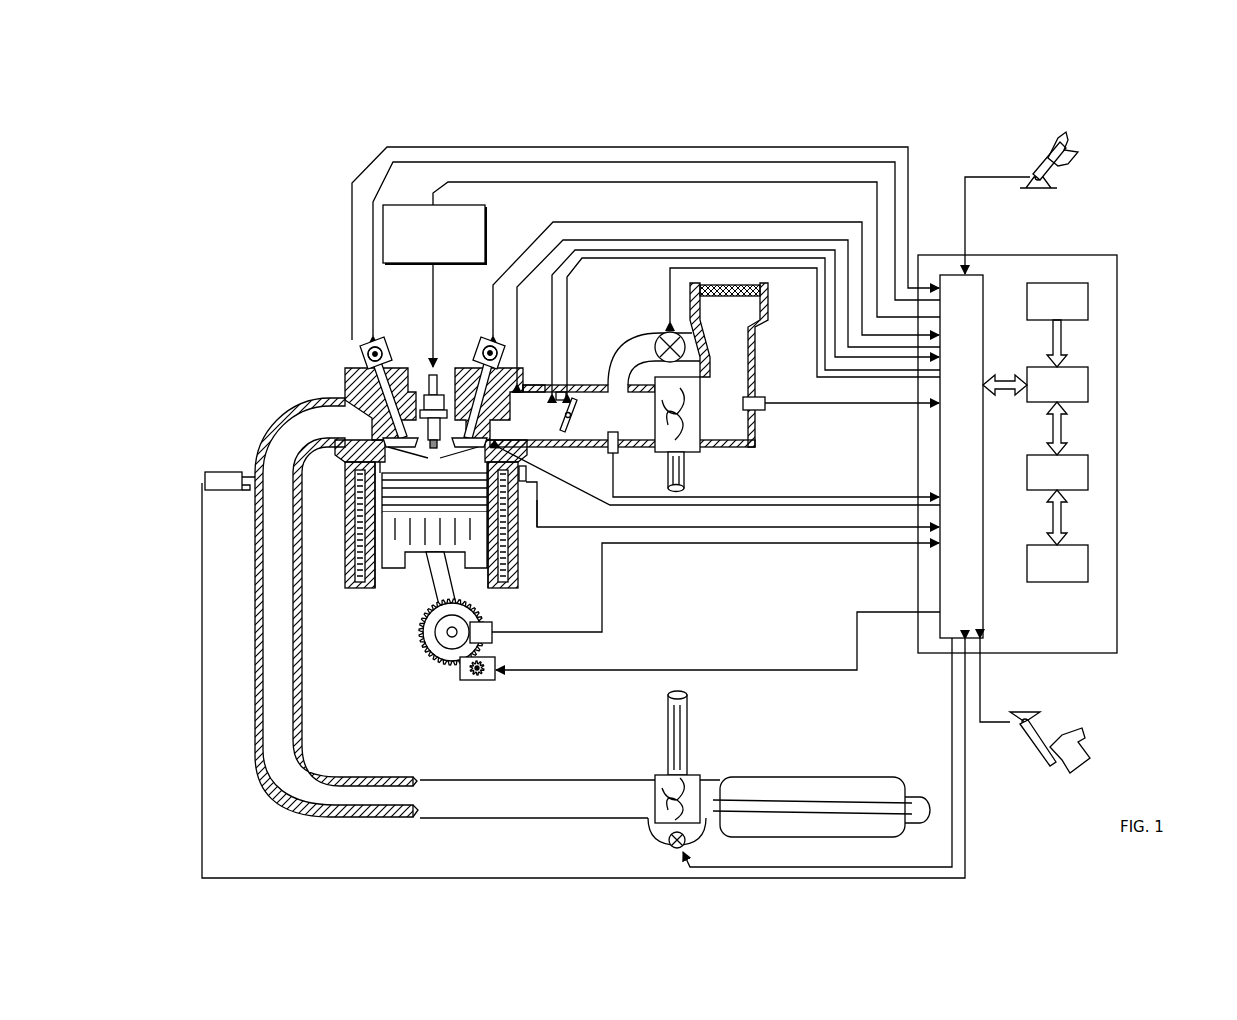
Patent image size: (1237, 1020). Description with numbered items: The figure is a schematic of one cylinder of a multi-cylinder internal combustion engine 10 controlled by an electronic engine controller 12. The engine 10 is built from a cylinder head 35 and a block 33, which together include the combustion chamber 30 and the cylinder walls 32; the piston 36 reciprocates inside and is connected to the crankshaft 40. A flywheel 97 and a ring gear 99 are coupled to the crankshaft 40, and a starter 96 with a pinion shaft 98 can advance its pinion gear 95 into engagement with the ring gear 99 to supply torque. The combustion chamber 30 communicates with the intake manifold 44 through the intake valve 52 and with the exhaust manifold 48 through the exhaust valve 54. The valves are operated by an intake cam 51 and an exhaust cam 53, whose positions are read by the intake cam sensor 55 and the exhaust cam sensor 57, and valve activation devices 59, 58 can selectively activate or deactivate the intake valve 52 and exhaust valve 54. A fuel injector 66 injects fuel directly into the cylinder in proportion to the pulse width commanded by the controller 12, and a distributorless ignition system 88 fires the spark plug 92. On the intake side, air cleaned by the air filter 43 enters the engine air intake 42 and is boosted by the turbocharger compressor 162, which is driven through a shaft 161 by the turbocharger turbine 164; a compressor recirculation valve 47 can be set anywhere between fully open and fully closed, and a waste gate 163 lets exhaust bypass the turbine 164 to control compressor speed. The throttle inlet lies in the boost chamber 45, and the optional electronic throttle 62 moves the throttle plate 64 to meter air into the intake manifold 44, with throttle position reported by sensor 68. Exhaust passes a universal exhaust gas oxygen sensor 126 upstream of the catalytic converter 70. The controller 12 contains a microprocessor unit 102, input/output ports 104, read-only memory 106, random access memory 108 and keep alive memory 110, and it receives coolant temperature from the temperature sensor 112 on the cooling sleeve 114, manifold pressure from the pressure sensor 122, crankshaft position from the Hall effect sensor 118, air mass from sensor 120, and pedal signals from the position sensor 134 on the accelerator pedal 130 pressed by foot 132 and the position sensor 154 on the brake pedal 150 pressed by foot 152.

The internal combustion engine 10 is at (290, 325).
The electronic engine controller 12 is at (1117, 256).
The combustion chamber 30 is at (430, 458).
The cylinder walls 32 is at (385, 595).
The block 33 is at (344, 492).
The cylinder head 35 is at (343, 372).
The piston 36 is at (417, 548).
The crankshaft 40 is at (440, 655).
The engine air intake 42 is at (618, 322).
The air filter 43 is at (740, 300).
The intake manifold 44 is at (588, 406).
The boost chamber 45 is at (715, 457).
The compressor recirculation valve 47 is at (660, 338).
The exhaust manifold 48 is at (455, 608).
The intake cam 51 is at (486, 345).
The intake valve 52 is at (472, 422).
The exhaust cam 53 is at (378, 342).
The exhaust valve 54 is at (343, 398).
The intake cam sensor 55 is at (499, 350).
The exhaust cam sensor 57 is at (365, 348).
The valve activation device 58 is at (385, 351).
The valve activation device 59 is at (483, 360).
The electronic throttle 62 is at (575, 410).
The throttle plate 64 is at (568, 424).
The fuel injector 66 is at (527, 476).
The throttle position sensor 68 is at (533, 378).
The catalytic converter 70 is at (755, 777).
The distributorless ignition system 88 is at (396, 205).
The spark plug 92 is at (438, 375).
The pinion gear 95 is at (480, 682).
The starter 96 is at (492, 676).
The flywheel 97 is at (423, 645).
The pinion shaft 98 is at (468, 682).
The ring gear 99 is at (445, 660).
The microprocessor unit 102 is at (1088, 385).
The input/output ports 104 is at (983, 290).
The read-only memory 106 is at (1088, 300).
The random access memory 108 is at (1088, 470).
The keep alive memory 110 is at (1088, 560).
The temperature sensor 112 is at (552, 513).
The cooling sleeve 114 is at (505, 545).
The Hall effect sensor 118 is at (493, 624).
The air mass sensor 120 is at (765, 400).
The pressure sensor 122 is at (608, 447).
The Universal Exhaust Gas Oxygen sensor 126 is at (205, 476).
The accelerator pedal 130 is at (1030, 160).
The foot 132 is at (1075, 150).
The position sensor 134 is at (1058, 183).
The brake pedal 150 is at (1045, 765).
The foot 152 is at (1076, 740).
The position sensor 154 is at (1018, 722).
The shaft 161 is at (668, 472).
The turbocharger compressor 162 is at (680, 462).
The waste gate 163 is at (668, 846).
The turbocharger turbine 164 is at (658, 775).